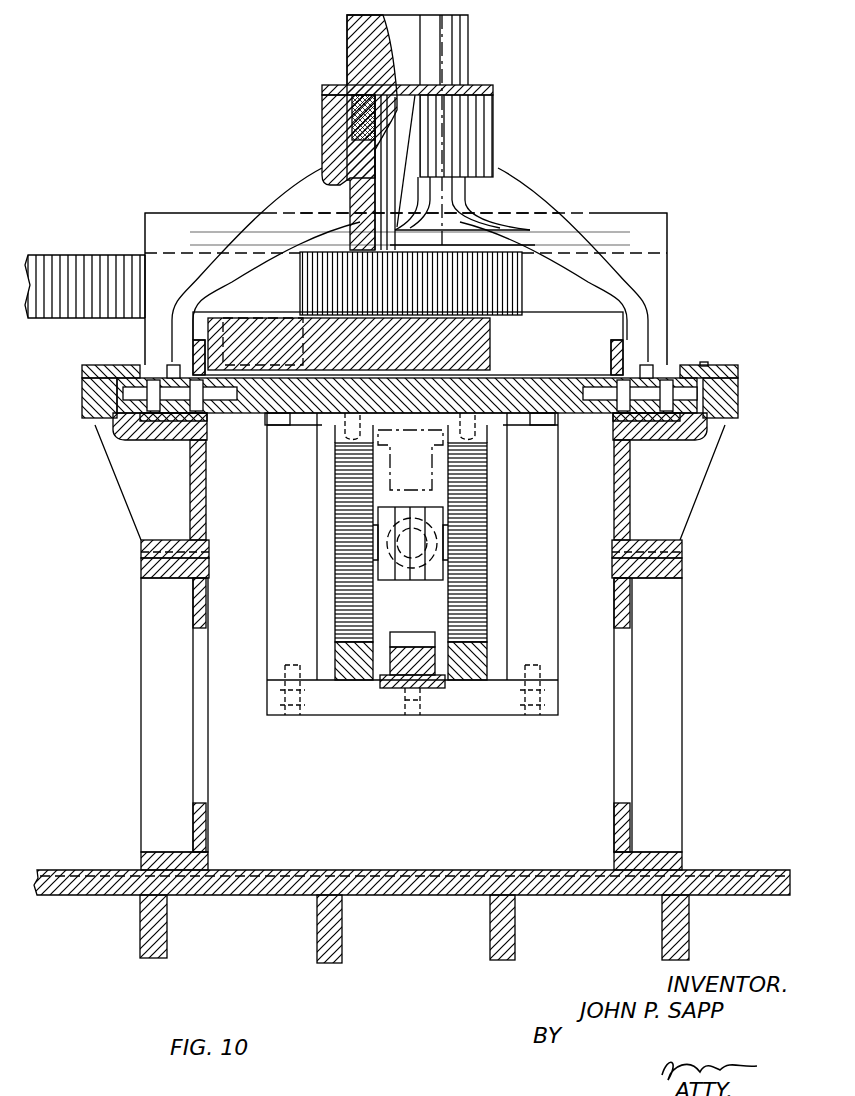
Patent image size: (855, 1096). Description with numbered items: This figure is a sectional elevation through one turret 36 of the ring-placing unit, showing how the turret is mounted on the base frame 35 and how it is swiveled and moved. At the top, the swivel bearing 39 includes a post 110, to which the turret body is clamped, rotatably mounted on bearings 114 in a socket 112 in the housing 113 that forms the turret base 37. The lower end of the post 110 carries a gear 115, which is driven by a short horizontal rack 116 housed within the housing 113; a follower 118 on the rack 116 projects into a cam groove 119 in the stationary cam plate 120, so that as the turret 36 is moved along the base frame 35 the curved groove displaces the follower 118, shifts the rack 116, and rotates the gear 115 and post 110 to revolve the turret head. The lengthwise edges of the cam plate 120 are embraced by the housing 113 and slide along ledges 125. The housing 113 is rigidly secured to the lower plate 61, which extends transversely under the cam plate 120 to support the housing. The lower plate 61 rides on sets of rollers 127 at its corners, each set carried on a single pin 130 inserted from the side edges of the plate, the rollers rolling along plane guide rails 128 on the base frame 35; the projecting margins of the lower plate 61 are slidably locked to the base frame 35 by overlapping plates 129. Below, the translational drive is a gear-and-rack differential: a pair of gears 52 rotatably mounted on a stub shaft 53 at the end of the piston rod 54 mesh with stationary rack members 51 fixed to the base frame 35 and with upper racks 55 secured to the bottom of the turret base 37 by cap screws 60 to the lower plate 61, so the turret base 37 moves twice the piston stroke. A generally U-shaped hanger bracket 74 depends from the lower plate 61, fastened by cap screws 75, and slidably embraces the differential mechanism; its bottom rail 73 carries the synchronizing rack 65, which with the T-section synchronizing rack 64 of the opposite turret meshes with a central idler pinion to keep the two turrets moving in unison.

The turret 36 is at (221, 101).
The post 110 is at (375, 43).
The socket 112 is at (368, 80).
The bearings 114 is at (372, 131).
The swivel bearing 39 is at (483, 106).
The housing 113 is at (568, 228).
The horizontal rack 116 is at (88, 262).
The follower 118 is at (262, 318).
The cam groove 119 is at (262, 305).
The ledges 125 is at (200, 337).
The gear 115 is at (485, 316).
The cam plate 120 is at (535, 364).
The lower plate 61 is at (562, 390).
The turret base 37 is at (673, 367).
The plates 129 is at (82, 376).
The pin 130 is at (125, 395).
The rollers 127 is at (168, 438).
The guide rails 128 is at (200, 440).
The cap screws 75 is at (300, 420).
The cap screws 60 is at (350, 425).
The racks 55 is at (335, 440).
The synchronizing rack 64 is at (390, 478).
The gears 52 is at (340, 598).
The piston rod 54 is at (425, 575).
The stub shaft 53 is at (415, 580).
The synchronizing rack 65 is at (418, 645).
The bracket 74 is at (410, 586).
The stationary rack members 51 is at (358, 680).
The bottom rail 73 is at (365, 712).
The base frame 35 is at (677, 641).